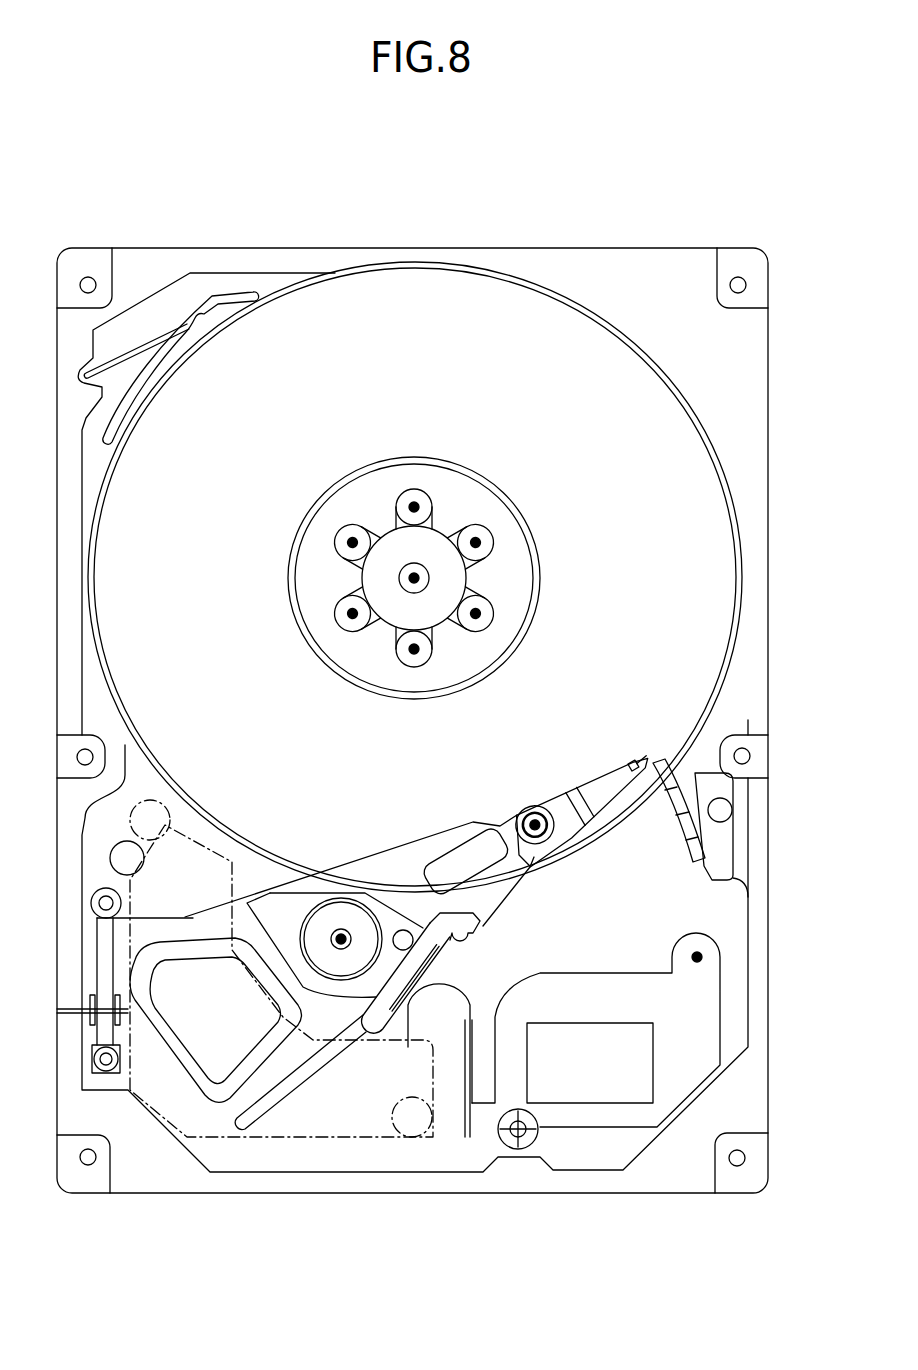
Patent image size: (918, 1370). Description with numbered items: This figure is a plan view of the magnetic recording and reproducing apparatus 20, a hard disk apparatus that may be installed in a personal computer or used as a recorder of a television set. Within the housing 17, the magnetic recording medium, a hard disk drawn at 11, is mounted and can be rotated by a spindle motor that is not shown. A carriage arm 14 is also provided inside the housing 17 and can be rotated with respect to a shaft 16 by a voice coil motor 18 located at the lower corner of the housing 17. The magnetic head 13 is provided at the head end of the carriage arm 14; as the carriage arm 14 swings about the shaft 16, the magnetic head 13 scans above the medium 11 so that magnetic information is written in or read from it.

The magnetic disk 11 is at (527, 333).
The magnetic head 13 is at (647, 756).
The carriage arm 14 is at (385, 855).
The shaft 16 is at (341, 934).
The housing 17 is at (770, 458).
The voice coil motor (VCM) 18 is at (221, 1125).
The magnetic recording and reproducing apparatus 20 is at (118, 176).